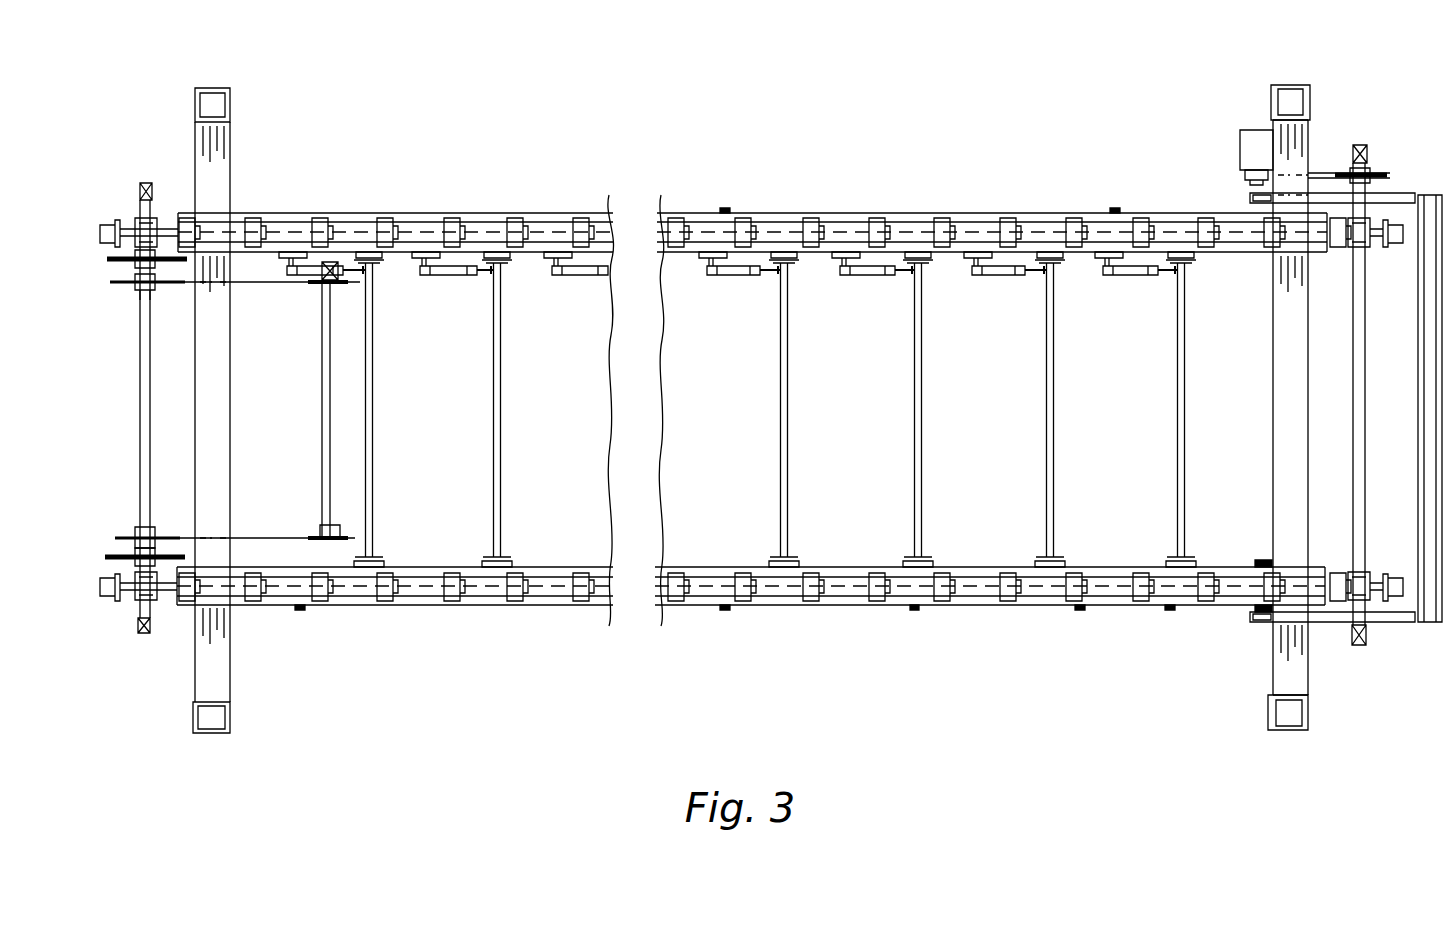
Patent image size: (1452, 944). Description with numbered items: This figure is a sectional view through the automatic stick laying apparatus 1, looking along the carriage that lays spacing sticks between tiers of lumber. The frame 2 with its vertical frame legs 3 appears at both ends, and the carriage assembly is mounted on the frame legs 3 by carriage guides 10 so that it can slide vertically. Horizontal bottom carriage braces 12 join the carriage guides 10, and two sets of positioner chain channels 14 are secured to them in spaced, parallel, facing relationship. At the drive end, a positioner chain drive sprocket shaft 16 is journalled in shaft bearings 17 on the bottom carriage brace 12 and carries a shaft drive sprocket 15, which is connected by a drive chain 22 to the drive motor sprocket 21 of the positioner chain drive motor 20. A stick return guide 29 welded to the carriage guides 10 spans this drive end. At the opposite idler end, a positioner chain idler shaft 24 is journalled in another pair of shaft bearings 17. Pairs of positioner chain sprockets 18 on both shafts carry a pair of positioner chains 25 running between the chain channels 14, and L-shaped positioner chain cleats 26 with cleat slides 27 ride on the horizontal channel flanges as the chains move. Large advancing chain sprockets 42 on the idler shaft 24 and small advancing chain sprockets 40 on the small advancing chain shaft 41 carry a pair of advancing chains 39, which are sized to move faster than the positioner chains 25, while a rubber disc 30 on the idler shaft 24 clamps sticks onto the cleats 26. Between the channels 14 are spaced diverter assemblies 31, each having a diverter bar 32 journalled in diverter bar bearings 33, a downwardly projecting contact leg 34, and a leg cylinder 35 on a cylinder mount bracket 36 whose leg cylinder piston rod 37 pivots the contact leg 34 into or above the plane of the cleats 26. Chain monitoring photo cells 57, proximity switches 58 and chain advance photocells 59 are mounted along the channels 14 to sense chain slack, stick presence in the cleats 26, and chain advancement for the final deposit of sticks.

The automatic stick laying apparatus 1 is at (1120, 110).
The frame 2 is at (219, 88).
The frame legs 3 is at (200, 90).
The carriage guides 10 is at (1273, 110).
The bottom carriage braces 12 is at (230, 378).
The positioner chain channels 14 is at (350, 213).
The shaft drive sprocket 15 is at (1386, 175).
The positioner chain drive sprocket shaft 16 is at (1366, 320).
The shaft bearings 17 is at (140, 188).
The positioner chain sprockets 18 is at (135, 261).
The positioner chain drive motor 20 is at (1240, 145).
The drive motor sprocket 21 is at (1248, 180).
The drive chain 22 is at (1315, 175).
The positioner chain idler shaft 24 is at (140, 378).
The positioner chains 25 is at (137, 225).
The positioner chain cleats 26 is at (114, 230).
The cleat slides 27 is at (520, 216).
The stick return guide 29 is at (1431, 628).
The rubber disc 30 is at (130, 282).
The diverter assemblies 31 is at (448, 278).
The diverter bar 32 is at (493, 358).
The diverter bar bearings 33 is at (380, 560).
The contact leg 34 is at (510, 265).
The leg cylinder 35 is at (585, 276).
The cylinder mount bracket 36 is at (280, 260).
The leg cylinder piston rod 37 is at (358, 274).
The advancing chains 39 is at (212, 290).
The small advancing chain sprockets 40 is at (322, 285).
The small advancing chain shaft 41 is at (322, 380).
The large advancing chain sprockets 42 is at (140, 300).
The chain monitoring photo cells 57 is at (725, 610).
The proximity switches 58 is at (300, 612).
The chain advance photocells 59 is at (1262, 560).